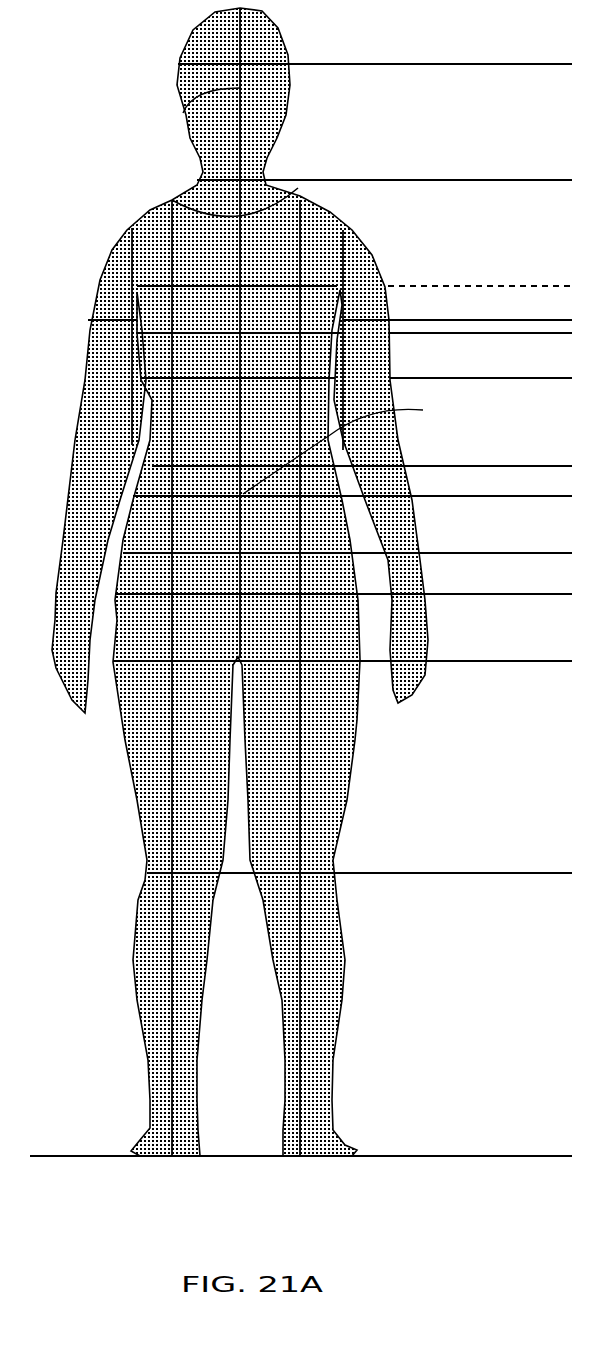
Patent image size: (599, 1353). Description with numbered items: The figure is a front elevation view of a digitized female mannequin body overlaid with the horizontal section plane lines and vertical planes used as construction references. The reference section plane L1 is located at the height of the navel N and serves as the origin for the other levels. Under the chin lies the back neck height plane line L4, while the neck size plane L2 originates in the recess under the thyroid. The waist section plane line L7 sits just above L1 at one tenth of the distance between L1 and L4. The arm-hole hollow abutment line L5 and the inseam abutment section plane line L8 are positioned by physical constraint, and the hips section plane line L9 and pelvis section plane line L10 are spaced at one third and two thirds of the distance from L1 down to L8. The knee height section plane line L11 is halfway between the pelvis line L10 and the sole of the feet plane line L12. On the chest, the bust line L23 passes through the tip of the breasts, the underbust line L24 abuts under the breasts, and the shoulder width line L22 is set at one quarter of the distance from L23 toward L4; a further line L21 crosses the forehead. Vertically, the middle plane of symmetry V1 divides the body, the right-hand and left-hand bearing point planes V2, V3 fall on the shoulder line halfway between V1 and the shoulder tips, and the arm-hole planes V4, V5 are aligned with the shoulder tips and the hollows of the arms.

The vertical middle plane V1 is at (183, 113).
The right-hand vertical plane V2 is at (172, 200).
The left-hand vertical plane V3 is at (313, 207).
The right-hand vertical arm-hole plane V4 is at (127, 230).
The left-hand vertical arm-hole plane V5 is at (350, 230).
The reference section plane line L1 is at (556, 498).
The neck size plane line L2 is at (298, 193).
The back neck height plane line L4 is at (503, 181).
The arm-hole hollow abutment line L5 is at (442, 300).
The waist section plane line L7 is at (529, 466).
The inseam abutment section plane line L8 is at (501, 662).
The hips section plane line L9 is at (452, 553).
The pelvis section plane line L10 is at (501, 595).
The knee height section plane line L11 is at (485, 874).
The sole of the feet plane line L12 is at (485, 1157).
The forehead level line L21 is at (509, 66).
The width of shoulders line L22 is at (420, 285).
The bust line L23 is at (500, 334).
The underbust line L24 is at (503, 379).
The navel N is at (342, 451).